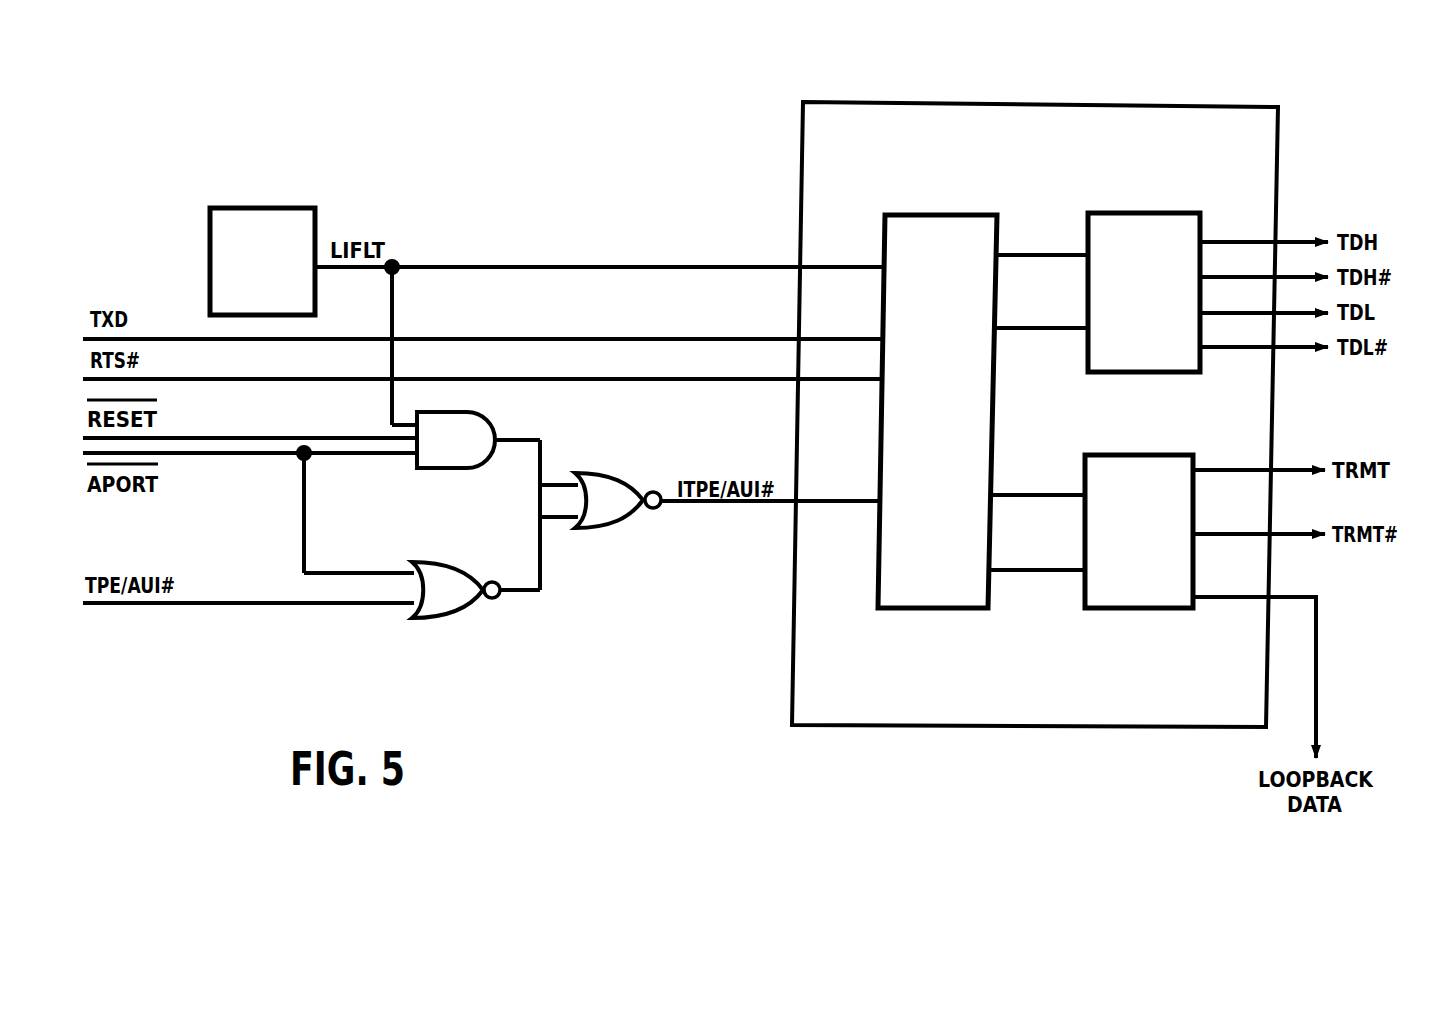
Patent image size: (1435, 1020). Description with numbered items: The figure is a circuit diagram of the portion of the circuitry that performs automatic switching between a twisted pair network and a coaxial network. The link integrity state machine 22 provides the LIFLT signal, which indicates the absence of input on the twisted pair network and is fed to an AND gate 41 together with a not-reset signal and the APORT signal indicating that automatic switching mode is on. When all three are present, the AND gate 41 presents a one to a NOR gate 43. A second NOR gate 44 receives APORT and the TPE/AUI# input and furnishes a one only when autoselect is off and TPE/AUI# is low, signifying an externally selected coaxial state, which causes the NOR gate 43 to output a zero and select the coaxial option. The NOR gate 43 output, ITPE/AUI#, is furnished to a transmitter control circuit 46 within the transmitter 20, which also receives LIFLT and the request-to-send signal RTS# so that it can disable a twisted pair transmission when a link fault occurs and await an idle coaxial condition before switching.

The transmitter 20 is at (1060, 415).
The link integrity state machine 22 is at (303, 208).
The AND gate 41 is at (492, 421).
The NOR gate 43 is at (622, 482).
The second NOR gate 44 is at (468, 574).
The transmitter control circuit 46 is at (948, 584).